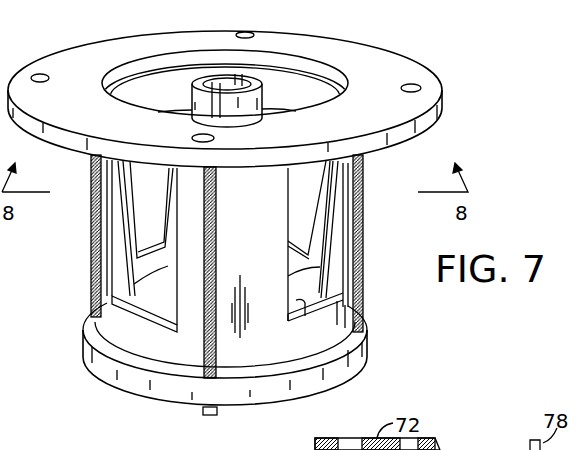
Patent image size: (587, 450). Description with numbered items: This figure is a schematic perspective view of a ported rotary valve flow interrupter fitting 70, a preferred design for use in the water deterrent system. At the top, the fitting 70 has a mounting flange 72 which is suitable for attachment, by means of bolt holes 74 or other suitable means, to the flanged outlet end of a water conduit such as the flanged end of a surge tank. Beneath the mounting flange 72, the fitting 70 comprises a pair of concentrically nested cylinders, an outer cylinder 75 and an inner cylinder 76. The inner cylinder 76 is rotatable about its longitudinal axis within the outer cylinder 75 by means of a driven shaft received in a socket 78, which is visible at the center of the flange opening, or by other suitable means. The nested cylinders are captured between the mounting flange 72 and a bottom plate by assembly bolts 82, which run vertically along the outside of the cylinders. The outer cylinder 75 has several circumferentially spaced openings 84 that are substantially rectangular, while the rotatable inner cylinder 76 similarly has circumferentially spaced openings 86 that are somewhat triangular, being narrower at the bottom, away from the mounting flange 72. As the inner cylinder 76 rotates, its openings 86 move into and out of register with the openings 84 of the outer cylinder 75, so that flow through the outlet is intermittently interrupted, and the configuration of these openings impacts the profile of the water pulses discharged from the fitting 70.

The ported rotary valve flow interrupter fitting 70 is at (423, 58).
The mounting flange 72 is at (133, 38).
The bolt holes 74 is at (40, 73).
The outer cylinder 75 is at (233, 365).
The inner cylinder 76 is at (295, 258).
The socket 78 is at (211, 82).
The assembly bolts 82 is at (363, 211).
The openings 84 is at (113, 243).
The openings 86 is at (129, 188).